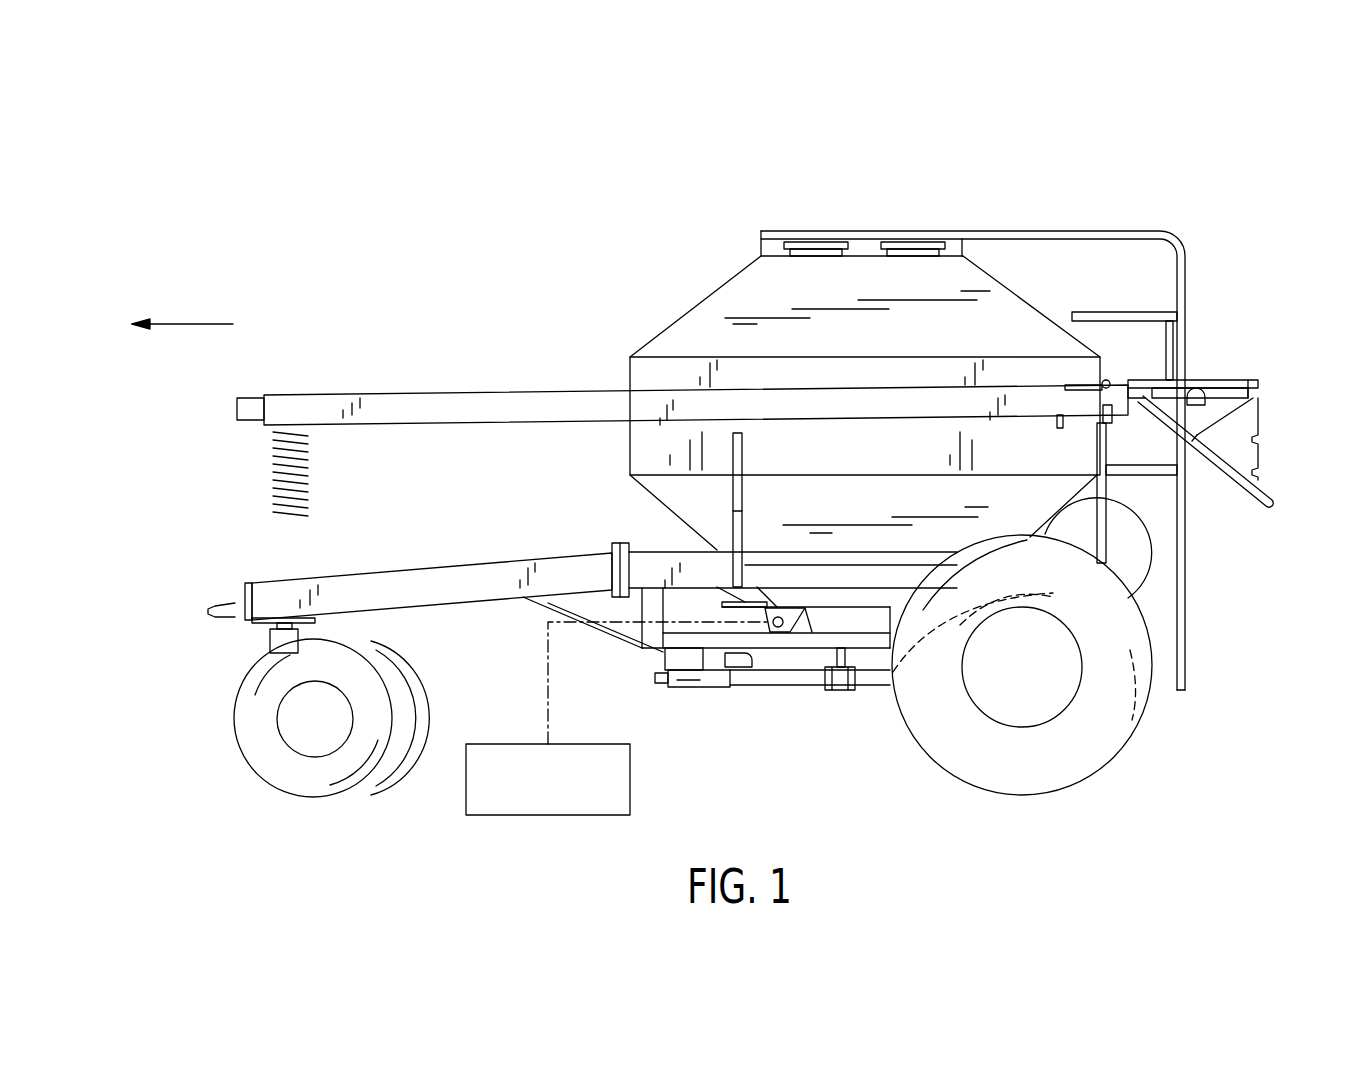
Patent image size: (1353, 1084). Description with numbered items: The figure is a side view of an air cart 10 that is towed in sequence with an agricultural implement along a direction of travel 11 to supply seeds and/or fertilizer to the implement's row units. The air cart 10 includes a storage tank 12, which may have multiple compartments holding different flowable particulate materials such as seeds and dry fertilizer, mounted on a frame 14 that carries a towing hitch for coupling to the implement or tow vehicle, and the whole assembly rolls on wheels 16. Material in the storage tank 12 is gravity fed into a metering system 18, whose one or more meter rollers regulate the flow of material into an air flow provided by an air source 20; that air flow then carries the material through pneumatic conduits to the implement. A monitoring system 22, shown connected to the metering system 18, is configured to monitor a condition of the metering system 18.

The air cart 10 is at (699, 187).
The direction of travel 11 is at (190, 322).
The storage tank 12 is at (738, 291).
The frame 14 is at (430, 570).
The wheels 16 is at (262, 770).
The metering system 18 is at (790, 628).
The air source 20 is at (1128, 540).
The monitoring system 22 is at (630, 778).